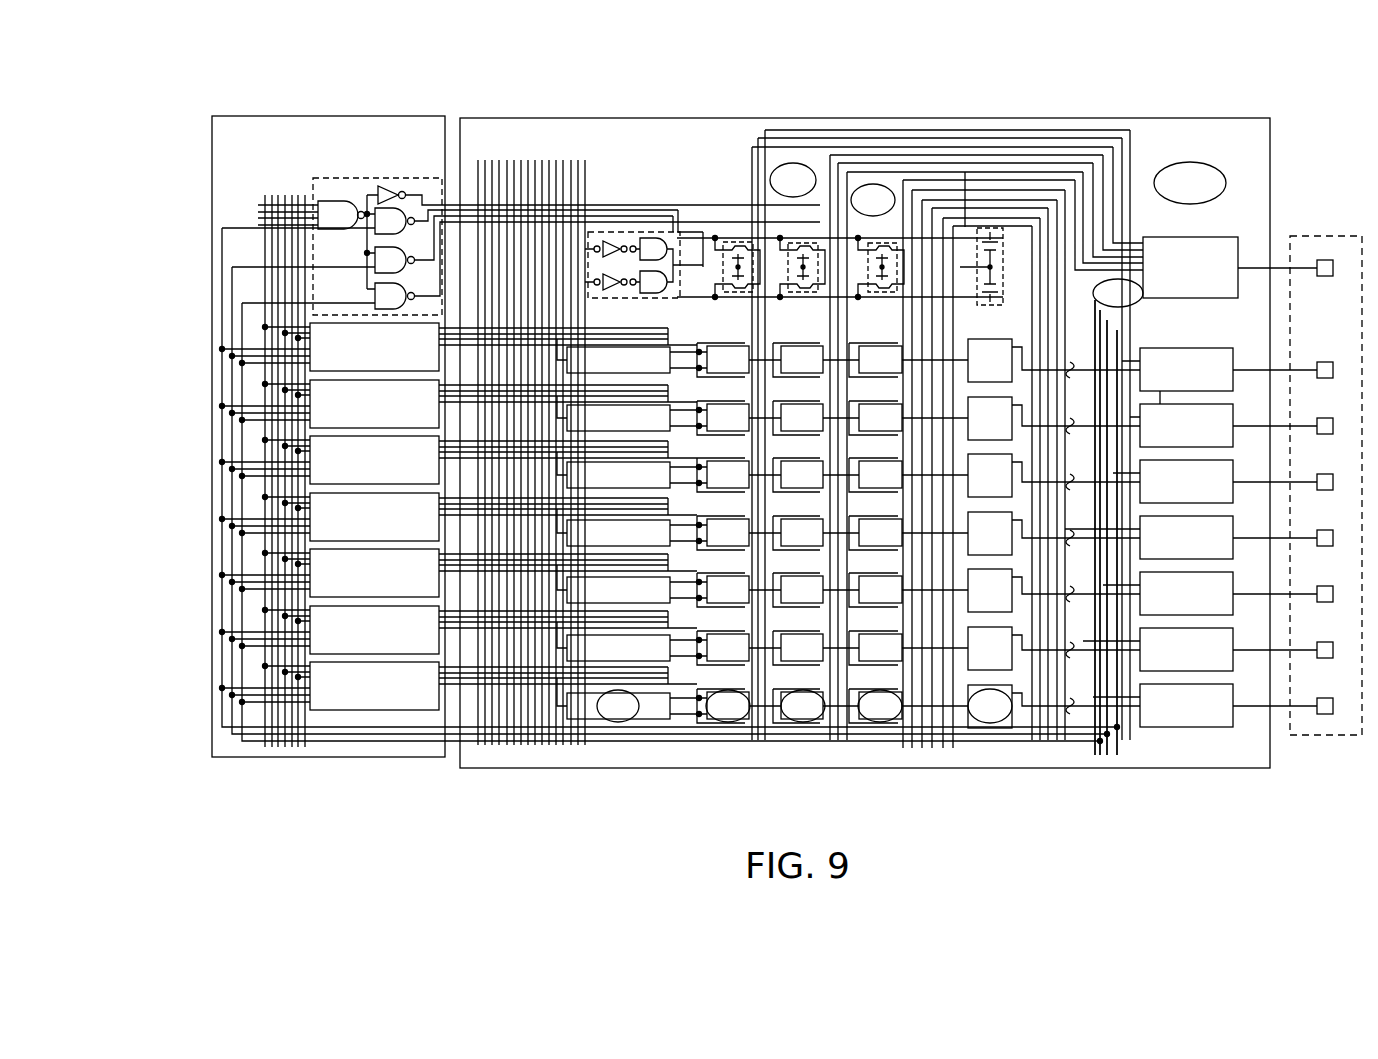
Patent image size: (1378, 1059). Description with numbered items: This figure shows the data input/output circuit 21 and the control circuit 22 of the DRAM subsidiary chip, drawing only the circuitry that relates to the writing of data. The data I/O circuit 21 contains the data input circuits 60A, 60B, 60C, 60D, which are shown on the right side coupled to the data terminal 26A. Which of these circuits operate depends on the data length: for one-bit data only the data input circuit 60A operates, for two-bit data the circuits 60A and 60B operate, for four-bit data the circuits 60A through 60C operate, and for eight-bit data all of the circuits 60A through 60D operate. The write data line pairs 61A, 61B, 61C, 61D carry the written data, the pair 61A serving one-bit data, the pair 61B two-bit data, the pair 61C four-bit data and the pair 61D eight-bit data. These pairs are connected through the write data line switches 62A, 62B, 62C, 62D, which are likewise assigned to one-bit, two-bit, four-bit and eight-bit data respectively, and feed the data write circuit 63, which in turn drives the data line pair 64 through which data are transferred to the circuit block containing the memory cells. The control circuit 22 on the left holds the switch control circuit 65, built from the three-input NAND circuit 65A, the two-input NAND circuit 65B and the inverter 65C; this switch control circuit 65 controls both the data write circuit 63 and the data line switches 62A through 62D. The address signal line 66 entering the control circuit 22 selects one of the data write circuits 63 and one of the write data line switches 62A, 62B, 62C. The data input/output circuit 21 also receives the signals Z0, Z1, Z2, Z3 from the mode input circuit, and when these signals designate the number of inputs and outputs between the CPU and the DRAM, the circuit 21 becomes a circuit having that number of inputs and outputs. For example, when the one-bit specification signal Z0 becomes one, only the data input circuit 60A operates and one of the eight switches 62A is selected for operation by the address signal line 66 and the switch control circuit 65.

The control circuit 22 is at (268, 73).
The data input/output circuit 21 is at (572, 118).
The address signal line 66 is at (180, 143).
The switch control circuit 65 is at (670, 381).
The 3-input NAND circuit 65A is at (338, 244).
The 2-input NAND circuit 65B is at (343, 265).
The inverter 65C is at (375, 190).
The data line pair 64 is at (478, 153).
The data write circuit 63 is at (618, 298).
The write data line switch 62A is at (736, 296).
The write data line switch 62B is at (700, 790).
The write data line switch 62C is at (884, 296).
The write data line switch 62D is at (910, 800).
The write data line pair 61A is at (898, 72).
The write data line pair 61B is at (898, 72).
The write data line pair 61C is at (965, 202).
The write data line pair 61D is at (1075, 72).
The data input circuit 60A is at (1238, 267).
The data input circuit 60B is at (1199, 537).
The data input circuit 60C is at (1208, 531).
The data input circuit 60D is at (1213, 537).
The data terminal 26A is at (1313, 243).
The 1-bit I/O specification signal Z0 is at (1095, 755).
The signal Z1 is at (1100, 755).
The signal Z2 is at (1107, 755).
The signal Z3 is at (1117, 755).